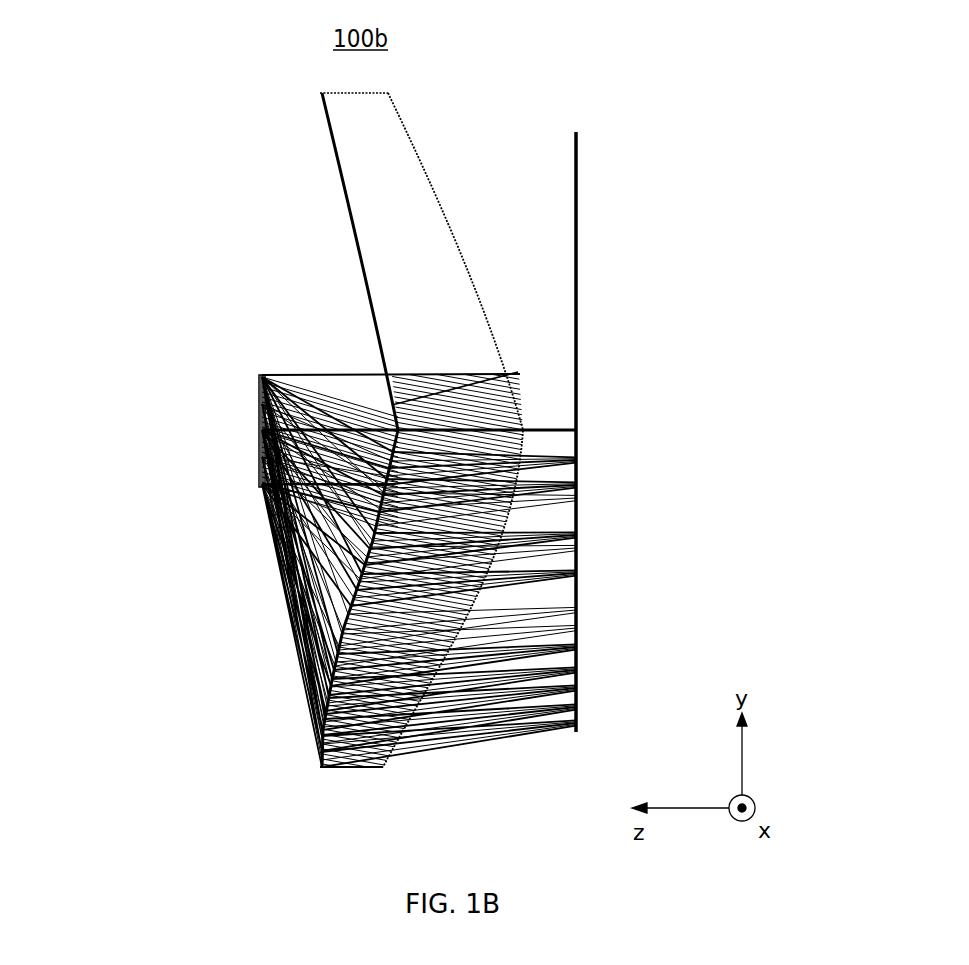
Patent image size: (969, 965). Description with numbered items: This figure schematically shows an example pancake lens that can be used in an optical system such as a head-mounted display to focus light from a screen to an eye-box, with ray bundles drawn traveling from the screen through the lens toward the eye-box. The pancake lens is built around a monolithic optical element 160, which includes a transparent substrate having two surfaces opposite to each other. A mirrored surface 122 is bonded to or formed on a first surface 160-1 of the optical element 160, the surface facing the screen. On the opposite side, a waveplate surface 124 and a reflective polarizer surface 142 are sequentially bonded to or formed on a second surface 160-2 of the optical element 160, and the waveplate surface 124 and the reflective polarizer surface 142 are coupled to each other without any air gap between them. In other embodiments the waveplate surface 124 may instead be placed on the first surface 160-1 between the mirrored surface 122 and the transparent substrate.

The mirrored surface 122 is at (395, 118).
The waveplate surface 124 is at (261, 430).
The reflective polarizer surface 142 is at (338, 182).
The monolithic optical element 160 is at (408, 430).
The first surface 160-1 is at (506, 430).
The second surface 160-2 is at (261, 430).